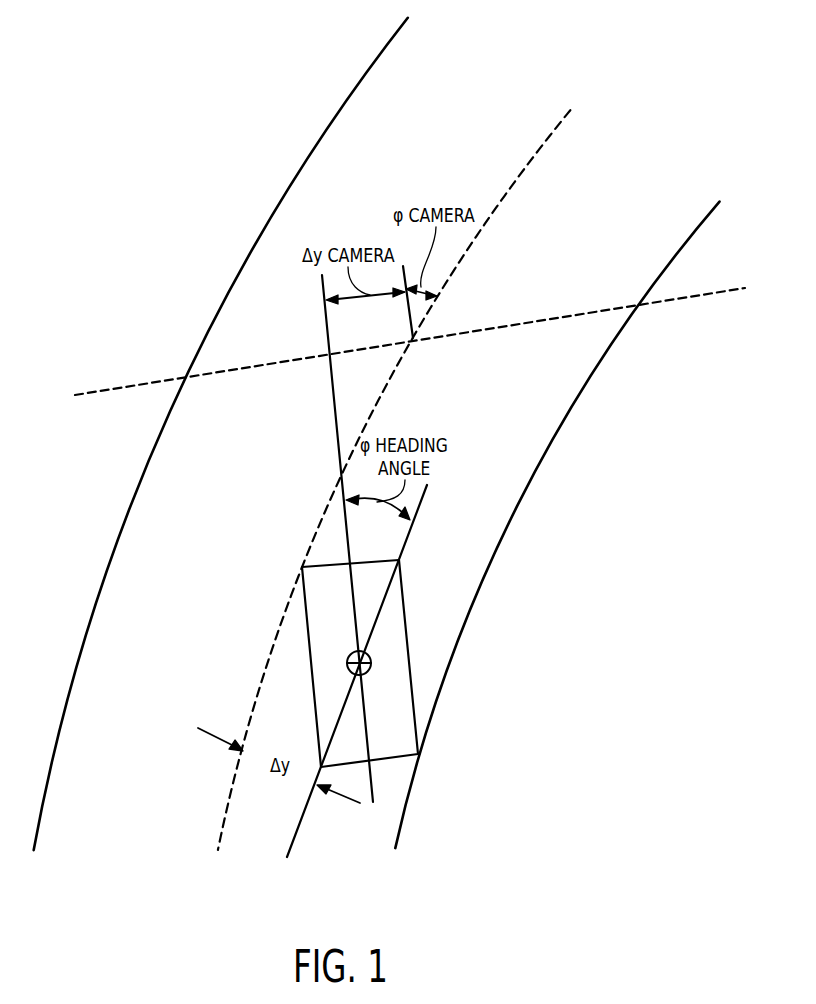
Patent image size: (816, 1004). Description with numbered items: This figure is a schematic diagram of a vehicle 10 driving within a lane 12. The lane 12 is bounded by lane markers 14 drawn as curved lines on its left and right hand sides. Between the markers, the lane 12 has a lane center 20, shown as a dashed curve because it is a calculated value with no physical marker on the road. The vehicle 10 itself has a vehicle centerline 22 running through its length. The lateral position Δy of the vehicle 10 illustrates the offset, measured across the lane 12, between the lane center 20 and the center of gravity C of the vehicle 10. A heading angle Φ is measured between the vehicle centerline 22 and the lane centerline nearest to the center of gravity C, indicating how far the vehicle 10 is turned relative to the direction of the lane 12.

The vehicle 10 is at (357, 671).
The lane 12 is at (377, 434).
The lane markers 14 is at (377, 434).
The lane center 20 is at (508, 255).
The vehicle centerline 22 is at (330, 368).
The center of gravity C is at (428, 634).